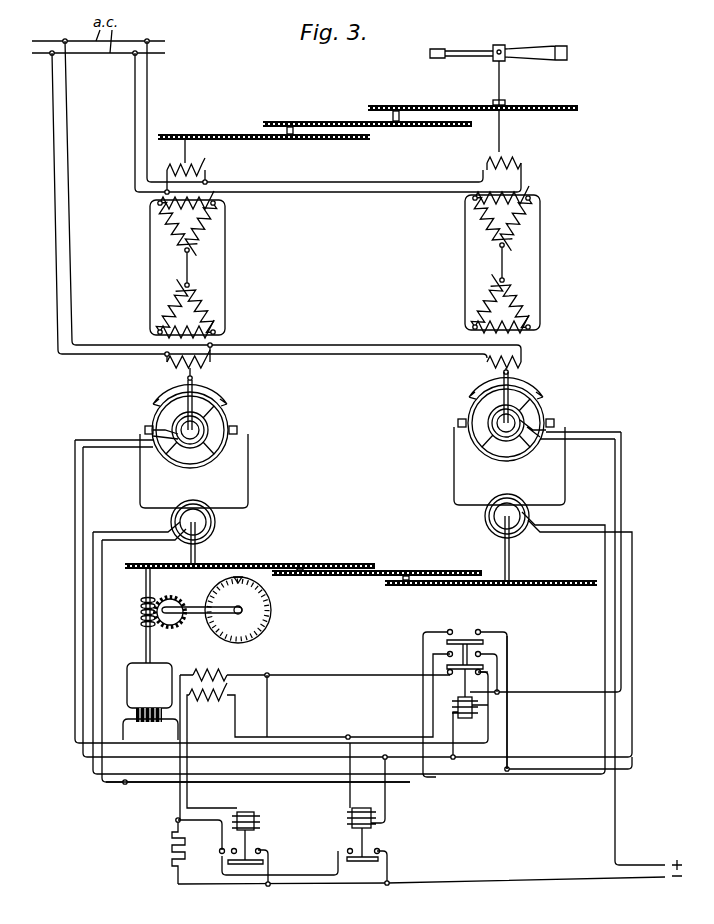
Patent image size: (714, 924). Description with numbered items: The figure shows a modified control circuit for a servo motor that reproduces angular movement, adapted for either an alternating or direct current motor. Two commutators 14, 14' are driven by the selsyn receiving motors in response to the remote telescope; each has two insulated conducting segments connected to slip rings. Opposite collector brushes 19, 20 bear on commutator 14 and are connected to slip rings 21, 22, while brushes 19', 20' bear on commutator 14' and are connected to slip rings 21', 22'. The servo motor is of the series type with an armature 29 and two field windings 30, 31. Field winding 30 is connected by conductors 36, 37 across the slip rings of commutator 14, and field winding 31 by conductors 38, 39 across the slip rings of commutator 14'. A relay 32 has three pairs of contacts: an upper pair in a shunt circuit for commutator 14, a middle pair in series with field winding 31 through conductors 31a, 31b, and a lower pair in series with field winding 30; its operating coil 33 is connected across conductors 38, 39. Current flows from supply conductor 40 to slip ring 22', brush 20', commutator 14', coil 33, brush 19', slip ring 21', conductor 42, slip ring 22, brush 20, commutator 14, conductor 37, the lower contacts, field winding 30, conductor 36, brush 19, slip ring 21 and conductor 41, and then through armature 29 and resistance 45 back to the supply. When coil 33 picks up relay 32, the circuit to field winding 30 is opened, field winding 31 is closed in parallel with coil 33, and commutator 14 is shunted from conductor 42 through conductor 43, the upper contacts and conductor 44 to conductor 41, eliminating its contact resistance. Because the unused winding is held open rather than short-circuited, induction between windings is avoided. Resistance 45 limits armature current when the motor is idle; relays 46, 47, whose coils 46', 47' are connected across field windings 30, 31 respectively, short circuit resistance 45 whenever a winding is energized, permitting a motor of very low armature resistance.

The commutator 14 is at (199, 424).
The collector brush 19 is at (153, 419).
The collector brush 20 is at (207, 457).
The slip ring 22 is at (210, 522).
The slip ring 21 is at (214, 543).
The commutator 14' is at (516, 416).
The collector brush 19' is at (441, 413).
The collector brush 20' is at (536, 450).
The slip ring 22' is at (487, 516).
The slip ring 21' is at (483, 549).
The conductor 36 is at (76, 625).
The conductor 37 is at (83, 652).
The conductor 41 is at (93, 680).
The conductor 42 is at (103, 708).
The conductor 38 is at (622, 596).
The conductor 39 is at (632, 623).
The supply conductor 40 is at (643, 865).
The armature 29 is at (150, 741).
The field winding 30 is at (228, 675).
The field winding 31 is at (217, 700).
The conductor 31a is at (316, 737).
The conductor 31b is at (364, 737).
The relay 32 is at (465, 695).
The operating coil 33 is at (475, 703).
The conductor 43 is at (510, 739).
The conductor 44 is at (410, 783).
The resistance 45 is at (170, 852).
The relay 46 is at (258, 853).
The operating coil 46' is at (272, 811).
The relay 47 is at (379, 856).
The operating coil 47' is at (388, 785).